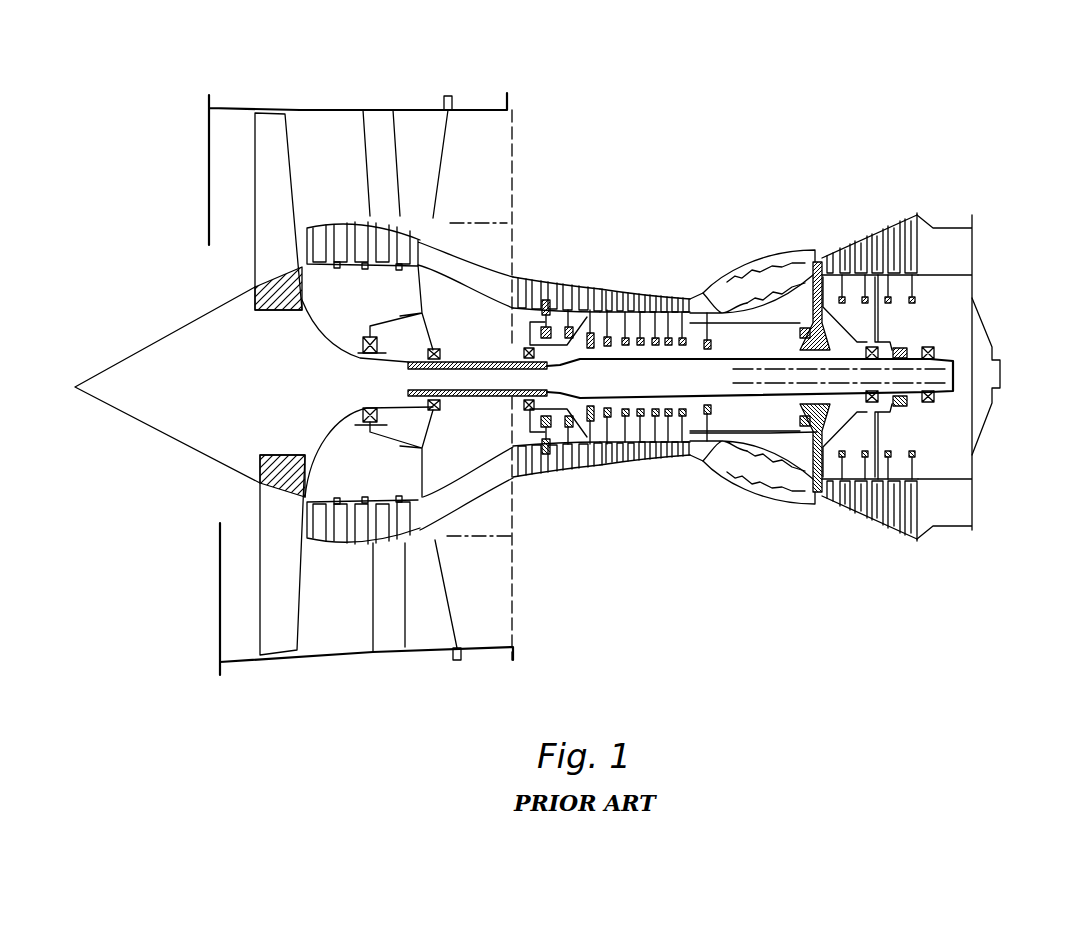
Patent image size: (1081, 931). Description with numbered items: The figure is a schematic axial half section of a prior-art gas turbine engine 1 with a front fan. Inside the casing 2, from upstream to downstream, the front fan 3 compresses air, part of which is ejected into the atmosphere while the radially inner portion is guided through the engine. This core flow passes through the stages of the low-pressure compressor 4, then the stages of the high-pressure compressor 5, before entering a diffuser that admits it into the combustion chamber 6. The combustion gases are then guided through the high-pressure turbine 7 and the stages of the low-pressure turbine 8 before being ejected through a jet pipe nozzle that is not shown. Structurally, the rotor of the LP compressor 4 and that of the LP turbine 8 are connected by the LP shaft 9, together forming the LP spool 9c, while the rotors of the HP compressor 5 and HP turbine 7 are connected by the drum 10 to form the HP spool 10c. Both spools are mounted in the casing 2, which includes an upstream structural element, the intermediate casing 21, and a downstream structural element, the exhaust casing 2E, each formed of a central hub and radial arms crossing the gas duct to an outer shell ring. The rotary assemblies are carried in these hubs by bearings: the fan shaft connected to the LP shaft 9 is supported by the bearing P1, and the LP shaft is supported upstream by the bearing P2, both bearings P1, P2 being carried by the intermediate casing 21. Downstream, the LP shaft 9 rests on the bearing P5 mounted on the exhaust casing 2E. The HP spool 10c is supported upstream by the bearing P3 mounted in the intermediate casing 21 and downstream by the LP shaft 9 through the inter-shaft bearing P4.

The gas turbine engine 1 is at (653, 167).
The casing 2 is at (562, 290).
The intermediate casing 21 is at (487, 110).
The exhaust casing 2E is at (950, 250).
The front fan 3 is at (273, 200).
The low-pressure compressor 4 is at (424, 255).
The high-pressure compressor 5 is at (510, 288).
The combustion chamber 6 is at (747, 270).
The high-pressure turbine 7 is at (813, 263).
The low-pressure turbine 8 is at (868, 225).
The LP shaft 9 is at (768, 400).
The LP spool 9c is at (666, 402).
The drum 10 is at (722, 322).
The HP spool 10c is at (660, 467).
The bearing P1 is at (357, 363).
The bearing P2 is at (413, 407).
The bearing P3 is at (519, 497).
The inter-shaft bearing P4 is at (868, 416).
The bearing P5 is at (928, 340).